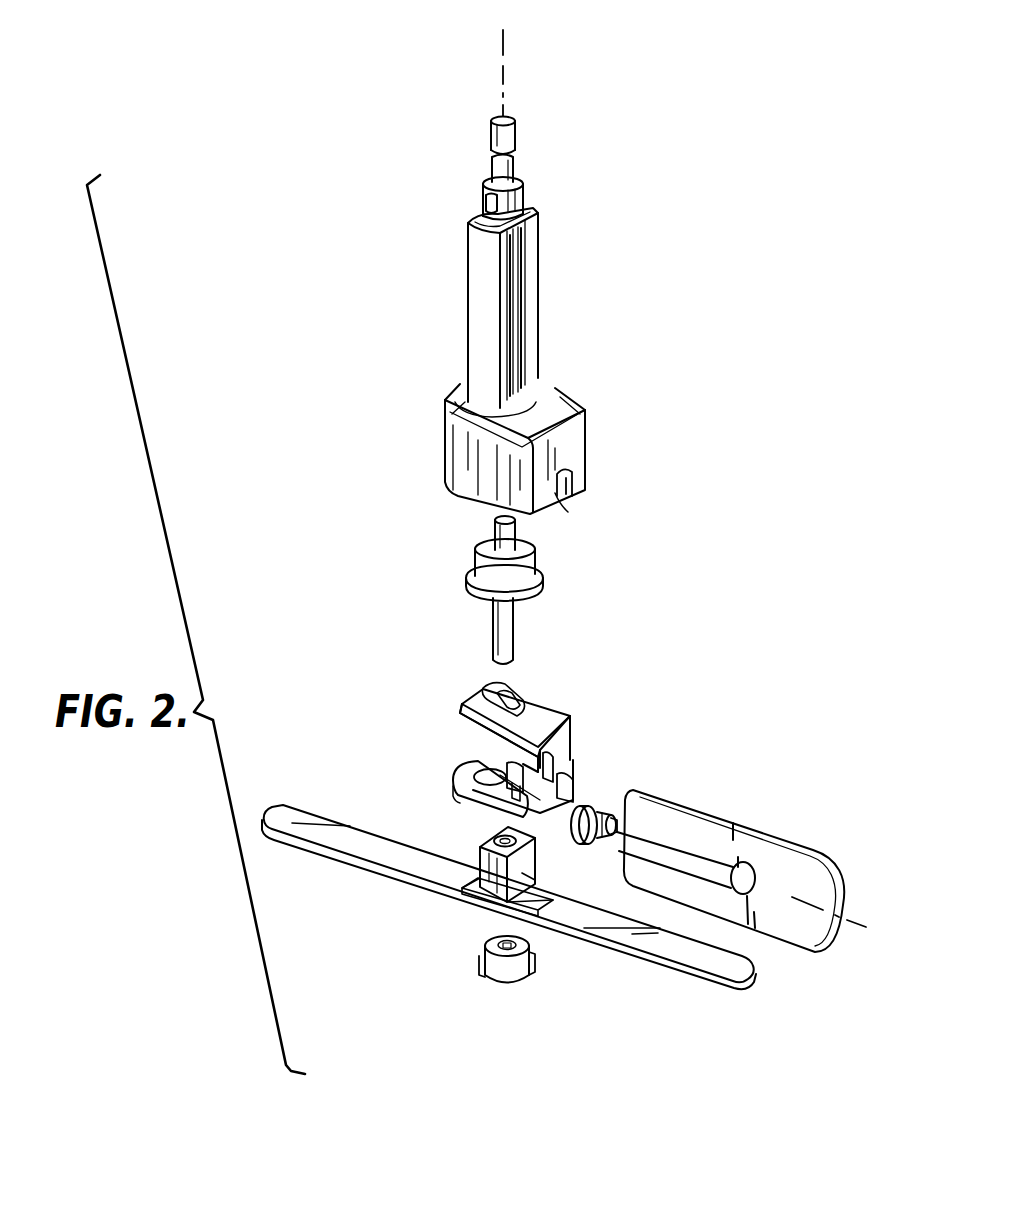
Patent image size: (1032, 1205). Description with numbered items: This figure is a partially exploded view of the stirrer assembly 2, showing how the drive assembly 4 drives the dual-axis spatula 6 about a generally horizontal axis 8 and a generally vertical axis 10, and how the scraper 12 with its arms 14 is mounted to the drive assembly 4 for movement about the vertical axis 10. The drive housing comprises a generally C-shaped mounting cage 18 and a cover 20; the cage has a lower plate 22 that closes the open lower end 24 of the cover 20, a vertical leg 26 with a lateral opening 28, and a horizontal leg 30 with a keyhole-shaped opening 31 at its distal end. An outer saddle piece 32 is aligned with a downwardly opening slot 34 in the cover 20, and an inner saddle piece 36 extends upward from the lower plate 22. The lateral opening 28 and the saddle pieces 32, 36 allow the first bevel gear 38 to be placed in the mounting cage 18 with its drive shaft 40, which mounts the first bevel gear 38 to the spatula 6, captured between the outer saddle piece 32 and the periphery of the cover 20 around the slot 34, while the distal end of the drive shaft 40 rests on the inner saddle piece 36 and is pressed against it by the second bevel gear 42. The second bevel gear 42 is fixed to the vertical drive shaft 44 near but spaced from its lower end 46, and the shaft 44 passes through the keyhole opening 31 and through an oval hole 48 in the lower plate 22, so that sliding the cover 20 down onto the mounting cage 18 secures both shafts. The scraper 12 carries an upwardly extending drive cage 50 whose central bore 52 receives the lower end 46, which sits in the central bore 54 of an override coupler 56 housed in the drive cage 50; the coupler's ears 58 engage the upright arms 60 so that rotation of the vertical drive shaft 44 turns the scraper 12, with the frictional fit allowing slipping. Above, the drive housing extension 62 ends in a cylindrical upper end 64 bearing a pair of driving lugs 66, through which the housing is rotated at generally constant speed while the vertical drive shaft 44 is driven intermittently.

The stirrer assembly 2 is at (188, 230).
The drive assembly 4 is at (616, 444).
The spatula 6 is at (716, 812).
The horizontal axis 8 is at (853, 904).
The vertical axis 10 is at (504, 50).
The scraper 12 is at (509, 908).
The arms 14 is at (334, 822).
The mounting cage 18 is at (515, 732).
The cover 20 is at (561, 395).
The lower plate 22 is at (467, 782).
The open lower end 24 is at (557, 504).
The vertical leg 26 is at (560, 758).
The lateral opening 28 is at (578, 764).
The horizontal leg 30 is at (505, 688).
The keyhole-shaped opening 31 is at (478, 697).
The outer saddle piece 32 is at (576, 781).
The slot 34 is at (578, 491).
The inner saddle piece 36 is at (478, 806).
The first bevel gear 38 is at (590, 805).
The drive shaft 40 is at (601, 847).
The second bevel gear 42 is at (540, 567).
The vertical drive shaft 44 is at (516, 138).
The lower end 46 is at (516, 652).
The oval hole 48 is at (484, 770).
The drive cage 50 is at (468, 904).
The central bore 52 is at (478, 850).
The central bore 54 is at (497, 935).
The override coupler 56 is at (491, 986).
The ears 58 is at (478, 967).
The upright arms 60 is at (522, 875).
The drive housing extension 62 is at (541, 259).
The cylindrical upper end 64 is at (522, 206).
The driving lugs 66 is at (486, 201).